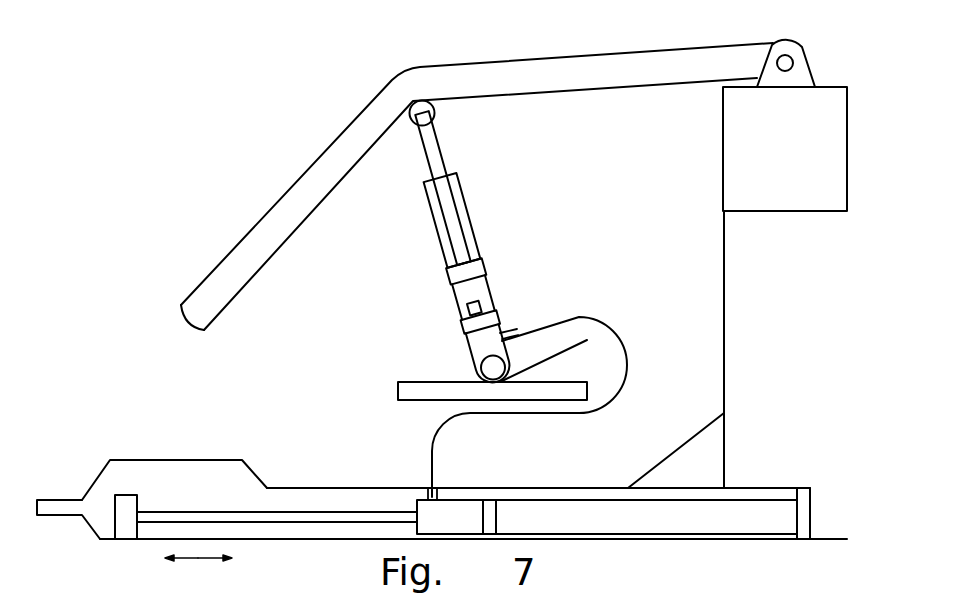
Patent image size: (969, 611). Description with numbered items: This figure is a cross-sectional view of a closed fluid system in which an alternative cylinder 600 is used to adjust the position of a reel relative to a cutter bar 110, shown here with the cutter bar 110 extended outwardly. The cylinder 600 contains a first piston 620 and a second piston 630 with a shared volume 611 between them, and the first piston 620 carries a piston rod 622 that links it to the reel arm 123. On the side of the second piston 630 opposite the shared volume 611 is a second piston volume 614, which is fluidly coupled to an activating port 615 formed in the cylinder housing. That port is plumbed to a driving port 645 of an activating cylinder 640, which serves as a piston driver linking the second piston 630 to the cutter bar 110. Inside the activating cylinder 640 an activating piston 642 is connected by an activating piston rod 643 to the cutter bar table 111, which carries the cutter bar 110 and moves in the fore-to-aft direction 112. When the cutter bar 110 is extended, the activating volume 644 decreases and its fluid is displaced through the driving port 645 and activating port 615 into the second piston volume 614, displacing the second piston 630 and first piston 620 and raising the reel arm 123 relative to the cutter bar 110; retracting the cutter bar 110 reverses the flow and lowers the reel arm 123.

The cutter bar 110 is at (53, 498).
The cutter bar table 111 is at (228, 460).
The fore-to-aft direction 112 is at (198, 560).
The reel arm 123 is at (538, 68).
The cylinder 600 is at (481, 242).
The shared volume 611 is at (478, 287).
The second piston volume 614 is at (480, 346).
The activating port 615 is at (507, 334).
The first piston 620 is at (480, 263).
The piston rod 622 is at (440, 143).
The second piston 630 is at (467, 323).
The activating cylinder 640 is at (569, 491).
The activating piston 642 is at (488, 505).
The activating piston rod 643 is at (338, 510).
The activating volume 644 is at (452, 505).
The driving port 645 is at (426, 492).